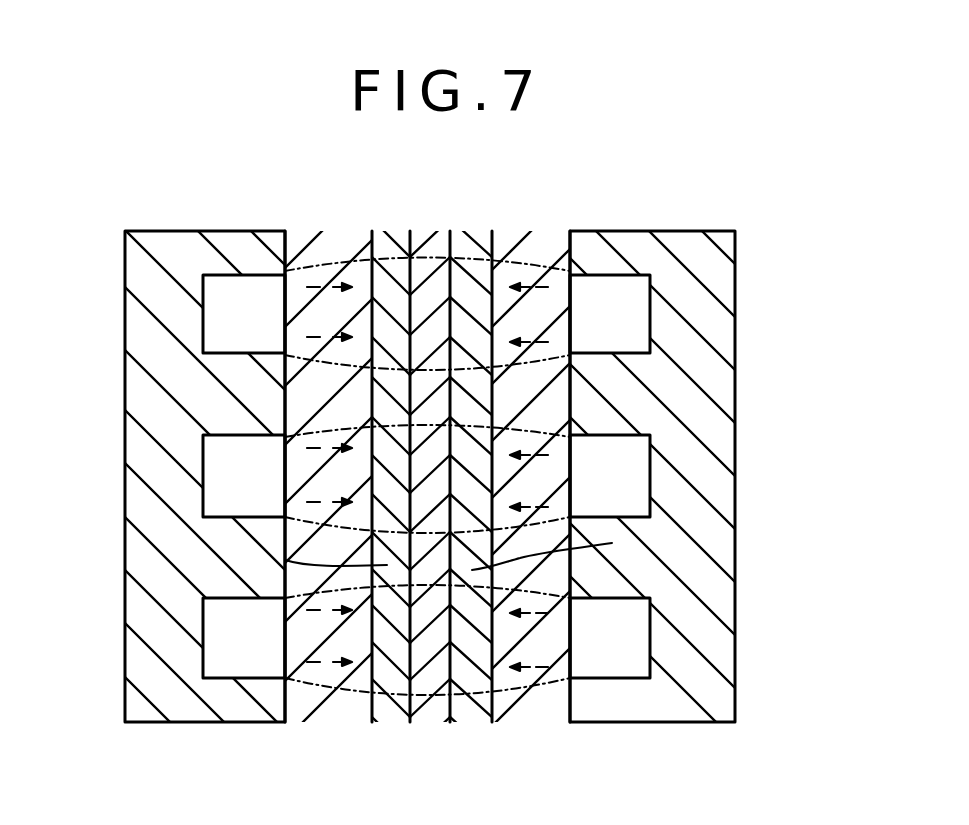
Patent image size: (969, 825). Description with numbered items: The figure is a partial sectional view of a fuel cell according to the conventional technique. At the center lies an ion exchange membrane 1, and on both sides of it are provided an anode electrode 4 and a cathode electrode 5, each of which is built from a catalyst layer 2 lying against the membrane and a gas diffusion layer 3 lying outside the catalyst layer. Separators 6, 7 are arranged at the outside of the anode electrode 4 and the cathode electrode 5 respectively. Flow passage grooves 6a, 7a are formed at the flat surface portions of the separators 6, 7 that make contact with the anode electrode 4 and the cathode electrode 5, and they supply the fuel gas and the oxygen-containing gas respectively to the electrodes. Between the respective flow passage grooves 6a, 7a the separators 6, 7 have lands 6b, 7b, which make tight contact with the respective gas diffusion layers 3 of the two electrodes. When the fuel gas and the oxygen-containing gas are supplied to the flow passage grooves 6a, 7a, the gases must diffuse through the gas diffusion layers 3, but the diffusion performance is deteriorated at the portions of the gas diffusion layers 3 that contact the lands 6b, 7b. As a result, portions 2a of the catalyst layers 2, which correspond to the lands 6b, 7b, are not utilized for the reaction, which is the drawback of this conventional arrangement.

The ion exchange membrane 1 is at (440, 237).
The catalyst layer 2 is at (393, 235).
The portions of the catalyst layers 2a is at (283, 556).
The gas diffusion layer 3 is at (330, 237).
The anode electrode 4 is at (504, 733).
The cathode electrode 5 is at (353, 733).
The separator 6 is at (743, 295).
The flow passage grooves 6a is at (645, 338).
The lands 6b is at (575, 400).
The separator 7 is at (172, 227).
The flow passage grooves 7a is at (206, 333).
The lands 7b is at (277, 397).